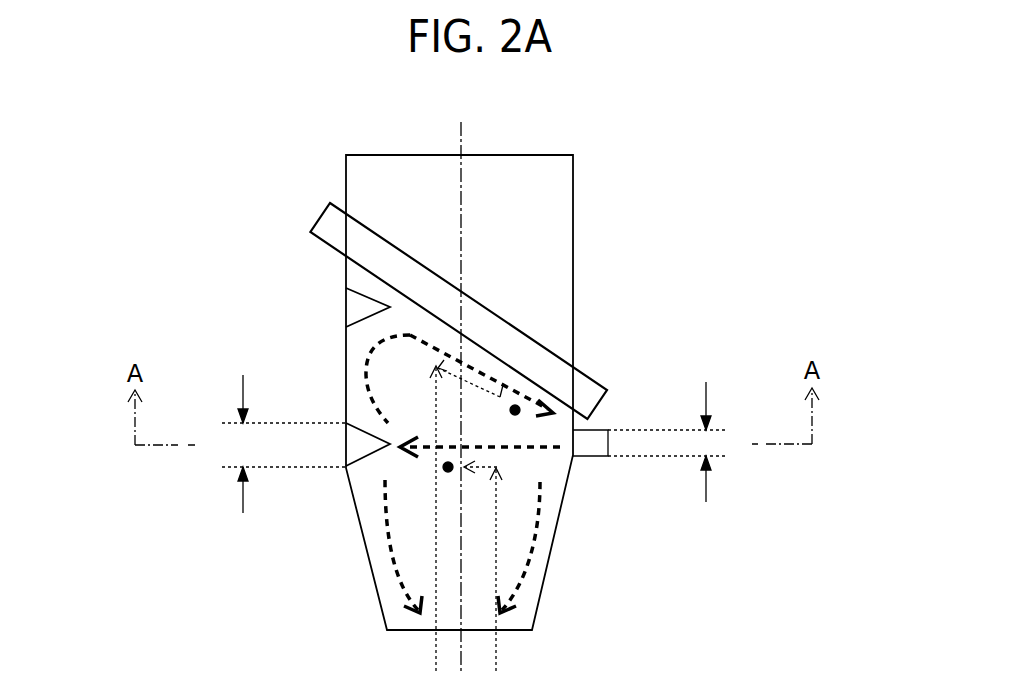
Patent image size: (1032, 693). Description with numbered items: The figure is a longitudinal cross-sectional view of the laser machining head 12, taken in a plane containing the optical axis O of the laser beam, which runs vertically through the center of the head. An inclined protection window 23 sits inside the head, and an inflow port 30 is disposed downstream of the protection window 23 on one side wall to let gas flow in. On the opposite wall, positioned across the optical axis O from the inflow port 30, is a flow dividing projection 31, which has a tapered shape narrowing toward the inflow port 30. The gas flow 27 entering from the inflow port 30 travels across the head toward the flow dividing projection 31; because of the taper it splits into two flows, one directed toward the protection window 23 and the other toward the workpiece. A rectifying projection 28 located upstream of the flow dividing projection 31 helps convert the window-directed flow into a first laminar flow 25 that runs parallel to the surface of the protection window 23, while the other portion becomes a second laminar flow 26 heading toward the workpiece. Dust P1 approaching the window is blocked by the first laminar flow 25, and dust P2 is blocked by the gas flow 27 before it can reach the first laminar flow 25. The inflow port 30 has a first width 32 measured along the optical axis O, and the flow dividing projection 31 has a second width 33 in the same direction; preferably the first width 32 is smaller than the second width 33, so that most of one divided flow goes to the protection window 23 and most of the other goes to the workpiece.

The laser machining head 12 is at (677, 147).
The protection window 23 is at (530, 330).
The first laminar flow 25 is at (408, 335).
The second laminar flow 26 is at (393, 555).
The gas flow 27 is at (540, 452).
The rectifying projection 28 is at (346, 305).
The inflow port 30 is at (592, 456).
The flow dividing projection 31 is at (346, 444).
The first width 32 is at (706, 393).
The second width 33 is at (243, 380).
The dust P1 is at (518, 402).
The dust P2 is at (446, 468).
The optical axis O is at (463, 130).